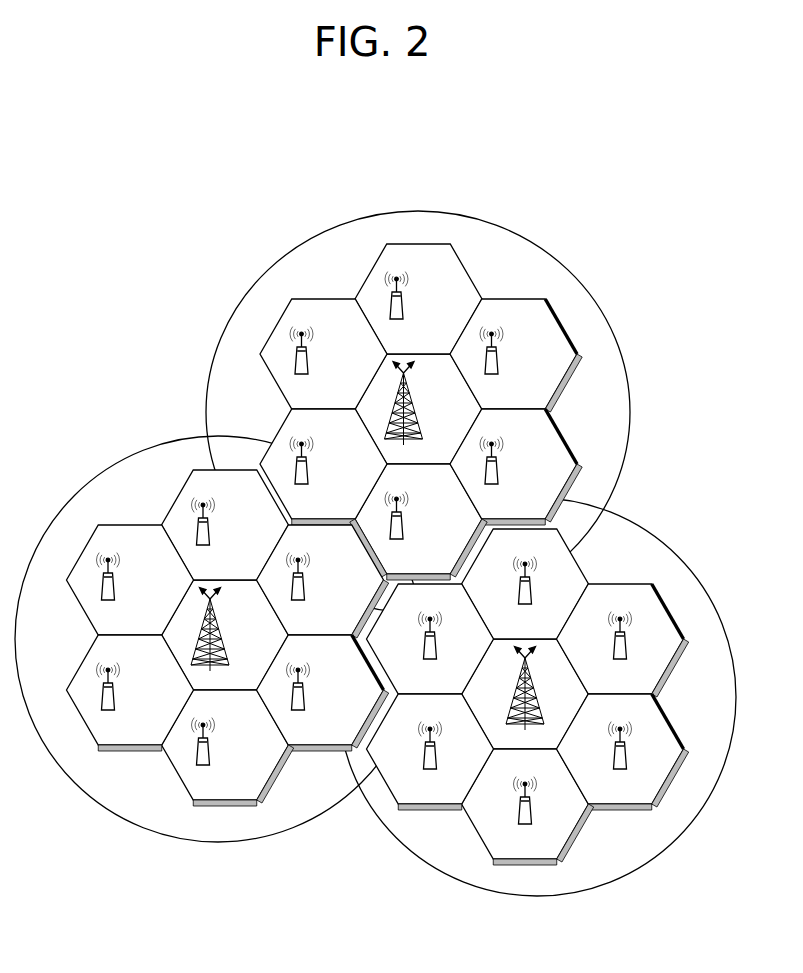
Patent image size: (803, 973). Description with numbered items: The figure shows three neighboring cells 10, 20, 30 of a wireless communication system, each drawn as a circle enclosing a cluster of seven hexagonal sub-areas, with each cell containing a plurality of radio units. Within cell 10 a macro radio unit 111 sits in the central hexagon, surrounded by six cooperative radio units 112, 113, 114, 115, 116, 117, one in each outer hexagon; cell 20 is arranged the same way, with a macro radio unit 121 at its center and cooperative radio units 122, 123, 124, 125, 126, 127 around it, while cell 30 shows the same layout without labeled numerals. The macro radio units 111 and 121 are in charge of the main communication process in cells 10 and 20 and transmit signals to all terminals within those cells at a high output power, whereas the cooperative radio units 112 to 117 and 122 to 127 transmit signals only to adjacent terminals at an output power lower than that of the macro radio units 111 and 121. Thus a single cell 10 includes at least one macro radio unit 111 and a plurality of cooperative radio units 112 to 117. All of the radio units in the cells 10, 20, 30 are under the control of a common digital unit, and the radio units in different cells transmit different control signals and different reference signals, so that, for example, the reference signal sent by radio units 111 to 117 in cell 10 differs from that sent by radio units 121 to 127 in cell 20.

The cell 10 is at (132, 458).
The cell 20 is at (487, 221).
The cell 30 is at (523, 898).
The macro radio unit 111 is at (220, 639).
The cooperative radio unit 112 is at (114, 697).
The cooperative radio unit 113 is at (209, 752).
The cooperative radio unit 114 is at (304, 697).
The cooperative radio unit 115 is at (304, 587).
The cooperative radio unit 116 is at (209, 532).
The cooperative radio unit 117 is at (114, 587).
The macro radio unit 121 is at (413, 411).
The cooperative radio unit 122 is at (308, 471).
The cooperative radio unit 123 is at (402, 526).
The cooperative radio unit 124 is at (498, 471).
The cooperative radio unit 125 is at (498, 361).
The cooperative radio unit 126 is at (402, 306).
The cooperative radio unit 127 is at (308, 361).